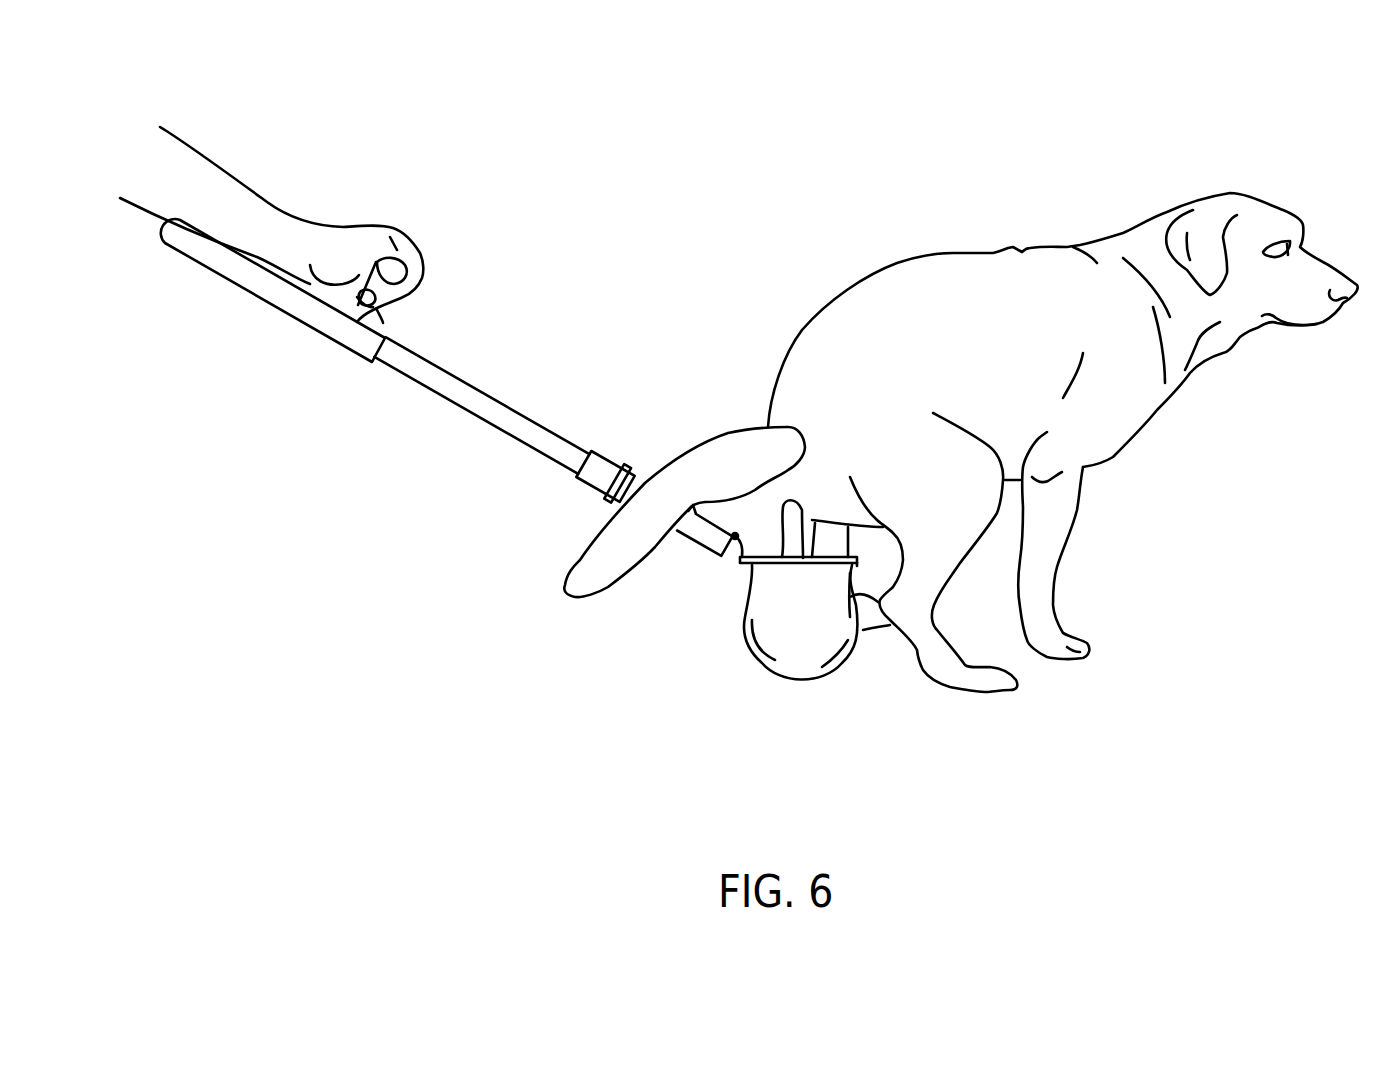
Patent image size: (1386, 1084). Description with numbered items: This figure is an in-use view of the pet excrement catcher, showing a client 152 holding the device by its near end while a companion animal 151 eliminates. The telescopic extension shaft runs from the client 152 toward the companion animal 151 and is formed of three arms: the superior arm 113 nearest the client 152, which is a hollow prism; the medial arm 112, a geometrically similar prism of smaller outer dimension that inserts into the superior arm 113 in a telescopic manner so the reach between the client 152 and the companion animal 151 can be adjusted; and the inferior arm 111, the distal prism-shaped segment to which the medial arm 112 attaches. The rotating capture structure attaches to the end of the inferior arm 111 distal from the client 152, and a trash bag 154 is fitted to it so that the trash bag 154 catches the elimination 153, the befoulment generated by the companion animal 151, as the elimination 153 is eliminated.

The inferior arm 111 is at (598, 487).
The medial arm 112 is at (490, 401).
The superior arm 113 is at (278, 308).
The companion animal 151 is at (1118, 235).
The client 152 is at (267, 202).
The elimination 153 is at (808, 498).
The trash bag 154 is at (813, 680).